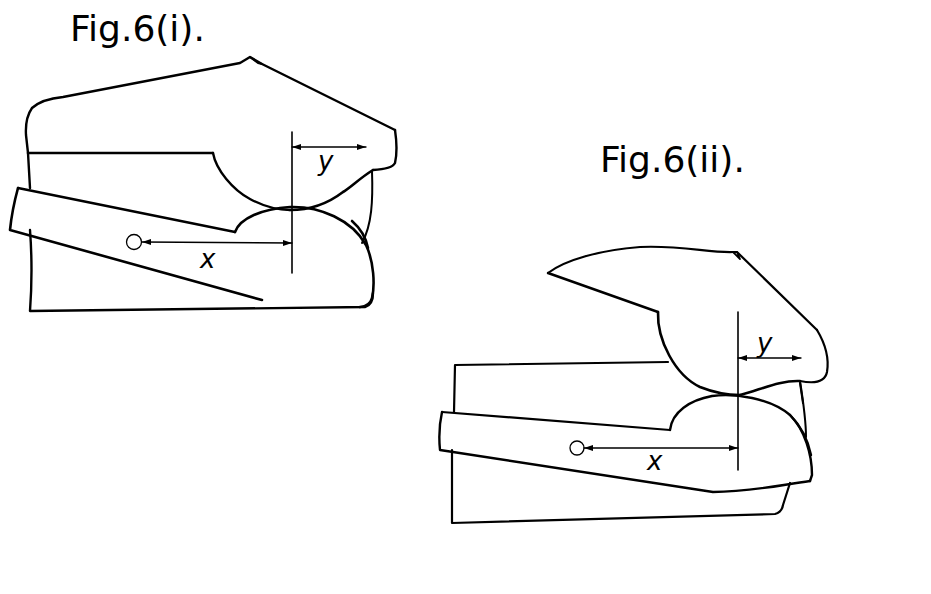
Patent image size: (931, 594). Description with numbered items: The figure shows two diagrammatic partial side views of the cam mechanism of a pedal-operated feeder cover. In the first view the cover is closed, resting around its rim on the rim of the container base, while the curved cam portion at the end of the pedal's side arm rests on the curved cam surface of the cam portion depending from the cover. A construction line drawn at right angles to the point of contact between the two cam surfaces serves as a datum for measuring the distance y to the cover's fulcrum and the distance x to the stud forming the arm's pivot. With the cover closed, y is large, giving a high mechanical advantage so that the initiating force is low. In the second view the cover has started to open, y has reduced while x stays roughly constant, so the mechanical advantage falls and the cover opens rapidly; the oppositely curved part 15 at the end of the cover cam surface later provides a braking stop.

The oppositely curved part 15 is at (803, 403).